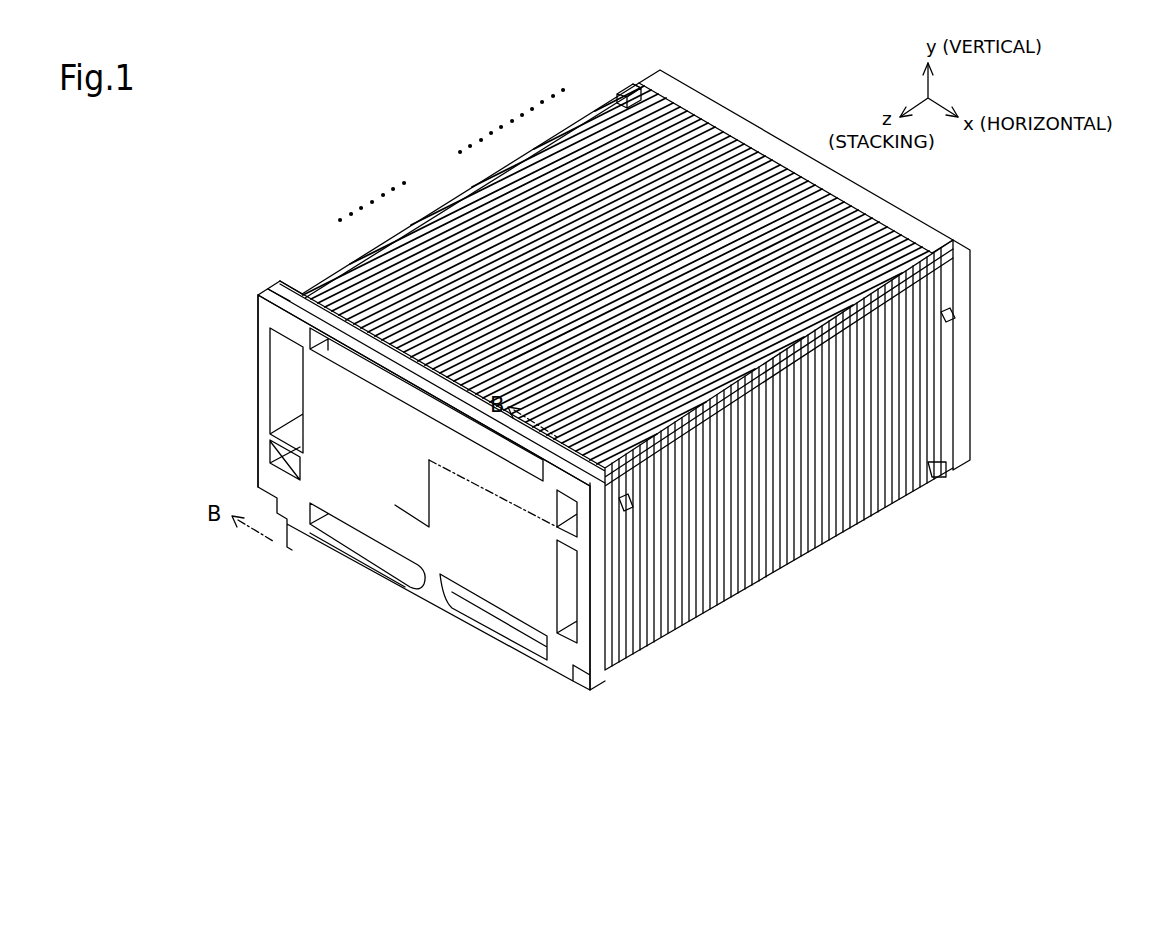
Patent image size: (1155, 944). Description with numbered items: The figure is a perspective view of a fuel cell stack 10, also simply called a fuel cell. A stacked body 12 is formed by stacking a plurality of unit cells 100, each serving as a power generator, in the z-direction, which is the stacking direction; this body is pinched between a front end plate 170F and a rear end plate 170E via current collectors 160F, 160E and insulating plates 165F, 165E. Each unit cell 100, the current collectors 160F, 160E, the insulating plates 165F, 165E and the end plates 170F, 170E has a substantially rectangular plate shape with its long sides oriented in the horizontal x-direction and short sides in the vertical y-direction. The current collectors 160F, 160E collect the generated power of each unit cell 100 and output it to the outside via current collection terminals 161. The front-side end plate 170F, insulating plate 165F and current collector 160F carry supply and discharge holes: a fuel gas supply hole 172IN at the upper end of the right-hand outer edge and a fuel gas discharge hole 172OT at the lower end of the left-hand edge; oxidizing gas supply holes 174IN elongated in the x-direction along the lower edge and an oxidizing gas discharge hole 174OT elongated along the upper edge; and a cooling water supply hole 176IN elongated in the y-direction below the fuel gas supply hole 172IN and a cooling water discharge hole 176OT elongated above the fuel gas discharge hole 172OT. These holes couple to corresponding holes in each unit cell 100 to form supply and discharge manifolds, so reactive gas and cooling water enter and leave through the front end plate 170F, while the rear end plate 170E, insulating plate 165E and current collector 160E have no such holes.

The fuel cell stack 10 is at (258, 81).
The stacked body 12 is at (586, 60).
The unit cell 100 is at (472, 203).
The current collector 160E is at (640, 84).
The current collector 160F is at (304, 290).
The insulating plate 165E is at (618, 92).
The insulating plate 165F is at (288, 284).
The end plate 170E is at (680, 80).
The end plate 170F is at (258, 295).
The current collection terminal 161 is at (637, 503).
The fuel gas supply hole 172IN is at (575, 512).
The fuel gas discharge hole 172OT is at (282, 453).
The oxidizing gas supply hole 174IN is at (500, 614).
The oxidizing gas discharge hole 174OT is at (427, 407).
The cooling water supply hole 176IN is at (565, 598).
The cooling water discharge hole 176OT is at (275, 380).